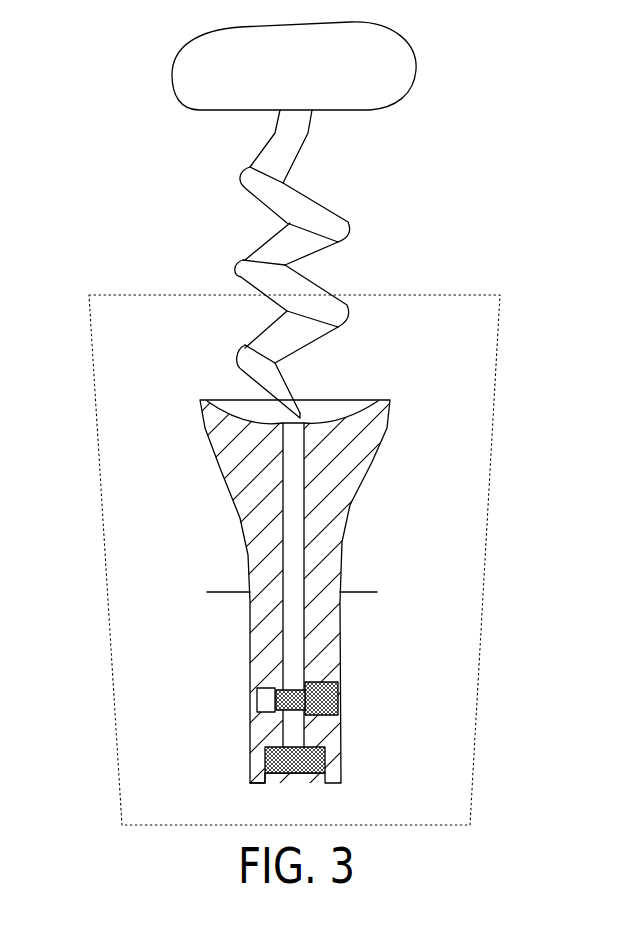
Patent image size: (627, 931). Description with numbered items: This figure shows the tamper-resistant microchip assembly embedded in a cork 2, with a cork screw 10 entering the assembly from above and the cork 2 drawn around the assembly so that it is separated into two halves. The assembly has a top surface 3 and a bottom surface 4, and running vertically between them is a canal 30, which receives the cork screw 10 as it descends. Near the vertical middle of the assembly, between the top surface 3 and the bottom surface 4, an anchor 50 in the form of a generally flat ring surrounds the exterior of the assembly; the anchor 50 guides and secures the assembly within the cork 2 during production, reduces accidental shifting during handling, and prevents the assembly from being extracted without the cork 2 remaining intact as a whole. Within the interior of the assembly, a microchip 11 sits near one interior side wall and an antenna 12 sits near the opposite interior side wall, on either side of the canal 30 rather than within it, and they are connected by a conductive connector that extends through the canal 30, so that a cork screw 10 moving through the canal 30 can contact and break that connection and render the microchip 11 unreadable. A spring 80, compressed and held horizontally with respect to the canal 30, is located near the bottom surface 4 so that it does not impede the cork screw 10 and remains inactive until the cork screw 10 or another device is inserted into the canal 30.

The cork 2 is at (488, 376).
The top surface 3 is at (313, 569).
The bottom surface 4 is at (270, 772).
The cork screw 10 is at (296, 143).
The microchip 11 is at (252, 690).
The antenna 12 is at (348, 681).
The canal 30 is at (294, 492).
The anchor 50 is at (377, 592).
The spring 80 is at (293, 773).